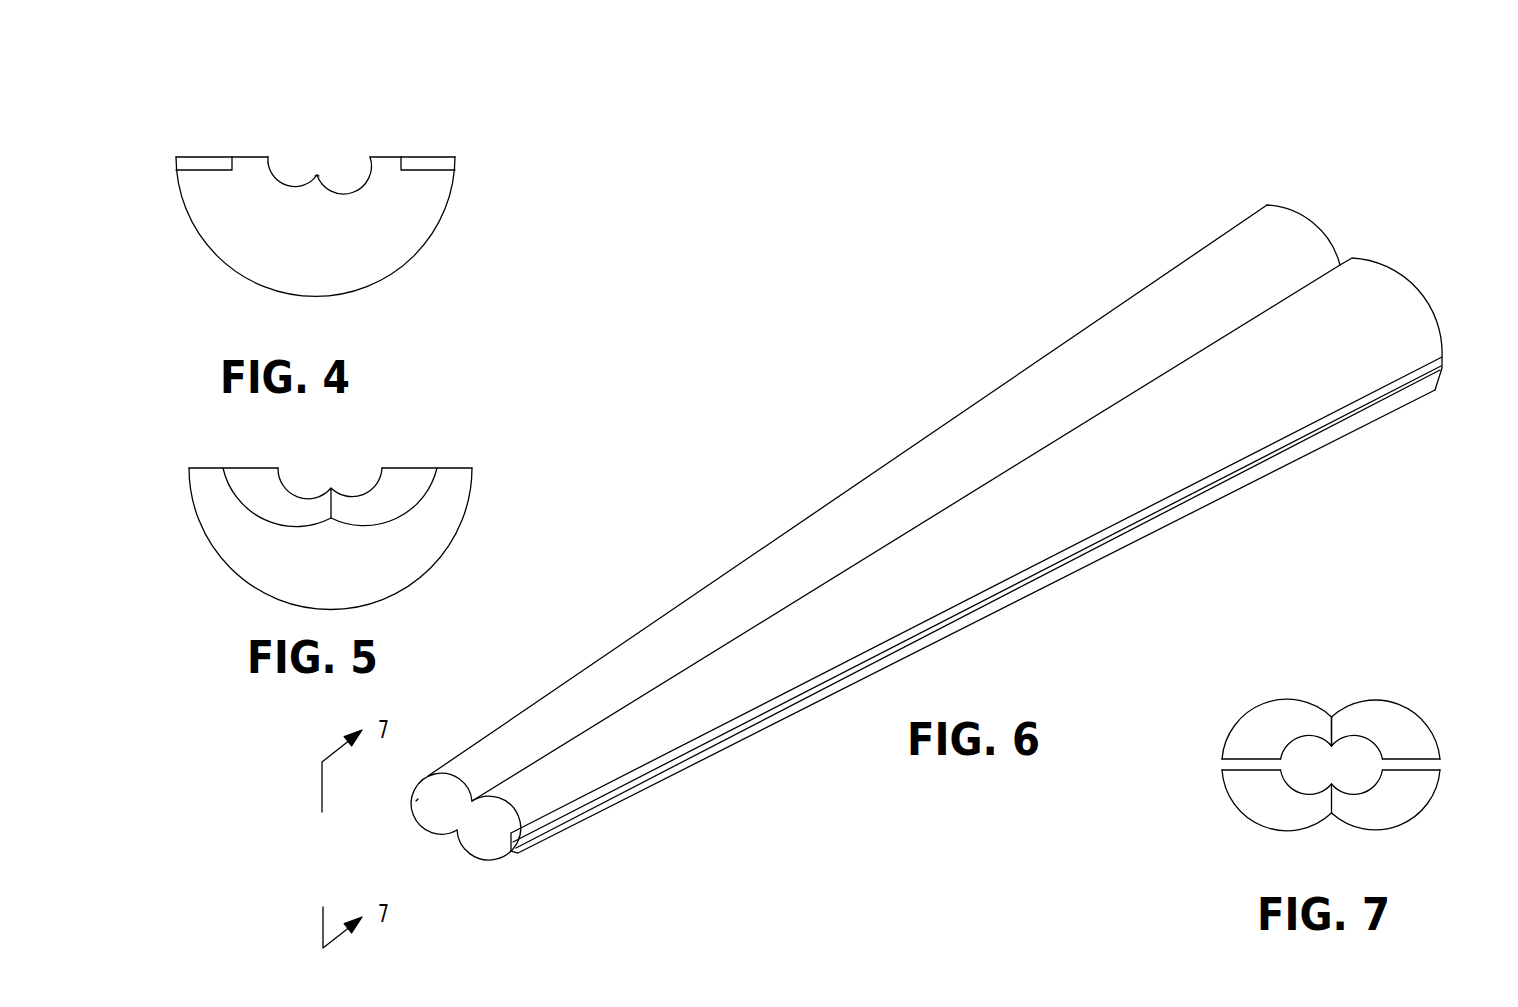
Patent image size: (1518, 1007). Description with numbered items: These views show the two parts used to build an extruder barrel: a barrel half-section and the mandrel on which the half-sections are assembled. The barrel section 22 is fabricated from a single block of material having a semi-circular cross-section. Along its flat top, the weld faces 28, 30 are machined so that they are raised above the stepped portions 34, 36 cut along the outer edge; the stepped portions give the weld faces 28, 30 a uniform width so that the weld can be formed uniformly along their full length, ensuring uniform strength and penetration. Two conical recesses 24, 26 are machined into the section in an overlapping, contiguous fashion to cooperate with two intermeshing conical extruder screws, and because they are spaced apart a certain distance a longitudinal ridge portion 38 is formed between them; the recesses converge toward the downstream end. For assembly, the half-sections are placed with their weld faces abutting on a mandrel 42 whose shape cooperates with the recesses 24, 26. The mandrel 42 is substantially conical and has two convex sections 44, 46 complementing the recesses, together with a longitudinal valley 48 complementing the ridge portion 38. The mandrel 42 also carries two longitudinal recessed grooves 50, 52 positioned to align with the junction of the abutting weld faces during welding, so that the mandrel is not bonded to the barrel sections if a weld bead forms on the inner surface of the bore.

In FIG. 4, the barrel section 22 is at (297, 294).
In FIG. 5, the barrel section 22 is at (463, 518).
In FIG. 4, the conical recess 24 is at (270, 178).
In FIG. 5, the conical recess 24 is at (370, 527).
In FIG. 4, the conical recess 26 is at (360, 178).
In FIG. 5, the conical recess 26 is at (291, 527).
In FIG. 4, the weld face 28 is at (254, 156).
In FIG. 5, the weld face 28 is at (458, 468).
In FIG. 4, the weld face 30 is at (375, 157).
In FIG. 5, the weld face 30 is at (200, 468).
In FIG. 4, the stepped portion 34 is at (199, 170).
In FIG. 4, the stepped portion 36 is at (421, 170).
In FIG. 4, the longitudinal ridge portion 38 is at (316, 175).
In FIG. 5, the longitudinal ridge portion 38 is at (331, 518).
In FIG. 6, the mandrel 42 is at (1373, 262).
In FIG. 7, the mandrel 42 is at (1423, 810).
In FIG. 6, the convex section 44 is at (1388, 342).
In FIG. 7, the convex section 44 is at (1423, 737).
In FIG. 6, the convex section 46 is at (1250, 248).
In FIG. 7, the convex section 46 is at (1280, 722).
In FIG. 6, the longitudinal valley 48 is at (1037, 452).
In FIG. 7, the longitudinal valley 48 is at (1331, 717).
In FIG. 6, the longitudinal recessed groove 50 is at (418, 799).
In FIG. 7, the longitudinal recessed groove 50 is at (1222, 765).
In FIG. 6, the longitudinal recessed groove 52 is at (520, 850).
In FIG. 7, the longitudinal recessed groove 52 is at (1440, 765).